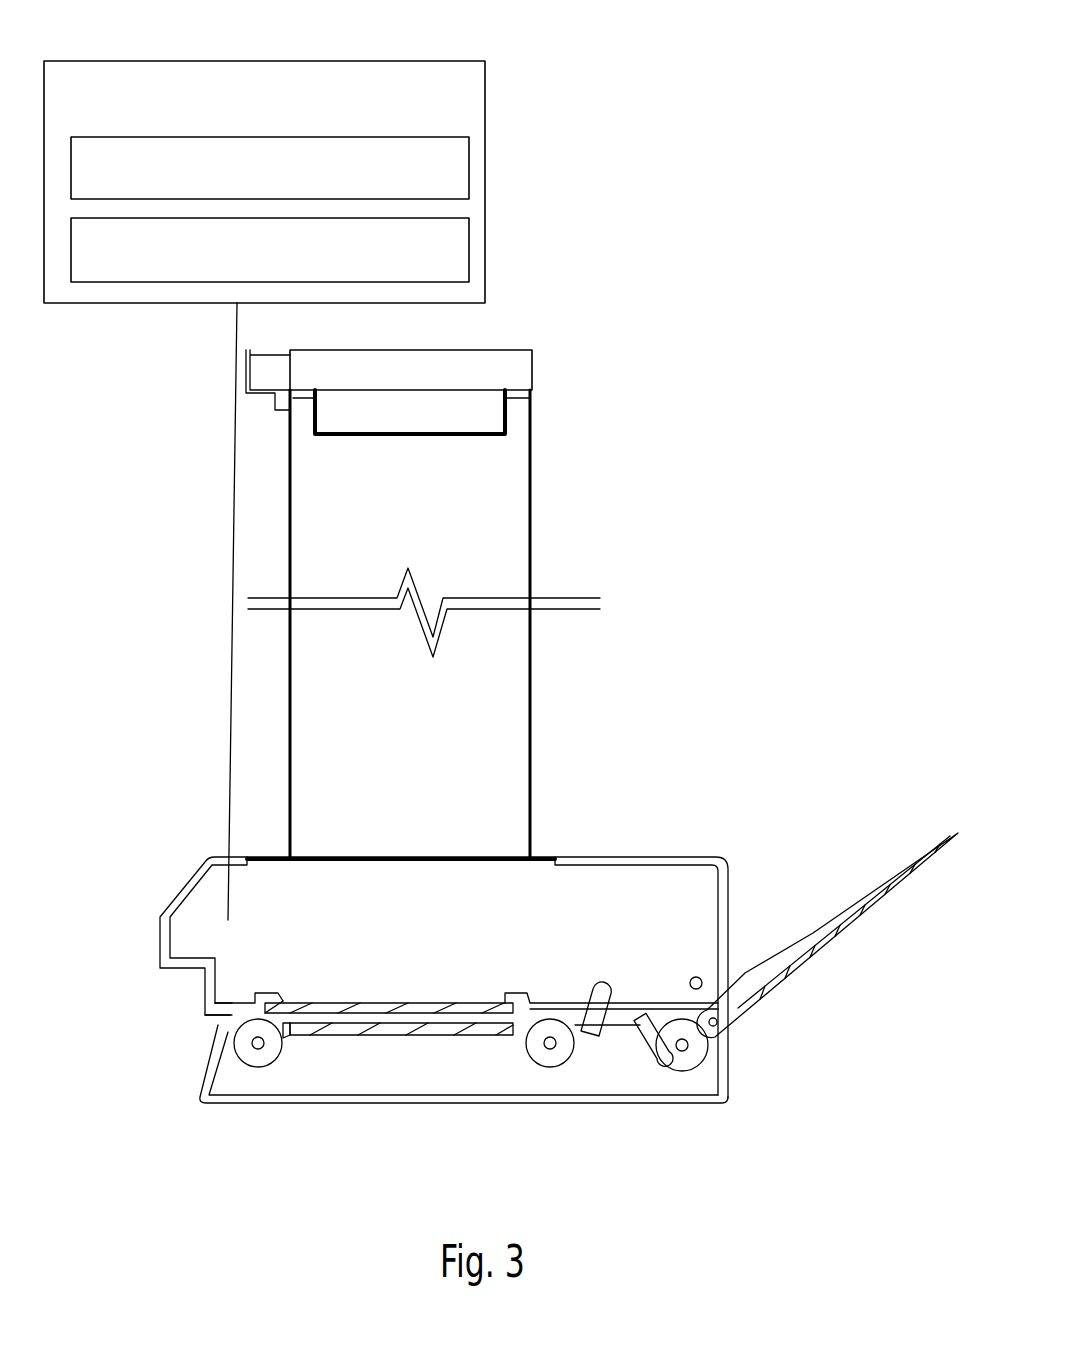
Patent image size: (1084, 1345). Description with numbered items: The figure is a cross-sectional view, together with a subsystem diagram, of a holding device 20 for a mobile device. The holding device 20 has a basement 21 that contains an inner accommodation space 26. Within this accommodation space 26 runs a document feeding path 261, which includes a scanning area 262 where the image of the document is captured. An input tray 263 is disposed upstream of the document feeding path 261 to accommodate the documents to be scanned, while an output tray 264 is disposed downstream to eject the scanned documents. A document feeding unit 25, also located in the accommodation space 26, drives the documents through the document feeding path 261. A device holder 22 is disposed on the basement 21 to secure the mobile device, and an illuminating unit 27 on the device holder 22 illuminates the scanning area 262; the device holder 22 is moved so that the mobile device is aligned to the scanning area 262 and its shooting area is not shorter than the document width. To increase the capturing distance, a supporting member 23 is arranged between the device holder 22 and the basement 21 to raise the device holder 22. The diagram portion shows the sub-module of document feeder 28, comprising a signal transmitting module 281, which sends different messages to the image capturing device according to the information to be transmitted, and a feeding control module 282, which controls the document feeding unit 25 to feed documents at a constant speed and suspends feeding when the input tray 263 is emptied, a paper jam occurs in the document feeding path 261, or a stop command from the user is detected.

The holding device 20 is at (131, 827).
The basement 21 is at (200, 1067).
The device holder 22 is at (505, 350).
The supporting member 23 is at (503, 792).
The document feeding unit 25 is at (264, 1050).
The accommodation space 26 is at (500, 958).
The document feeding path 261 is at (620, 1013).
The scanning area 262 is at (347, 1020).
The input tray 263 is at (853, 917).
The output tray 264 is at (230, 1020).
The illuminating unit 27 is at (270, 380).
The sub-module of document feeder 28 is at (205, 61).
The signal transmitting module 281 is at (457, 160).
The feeding control module 282 is at (457, 241).